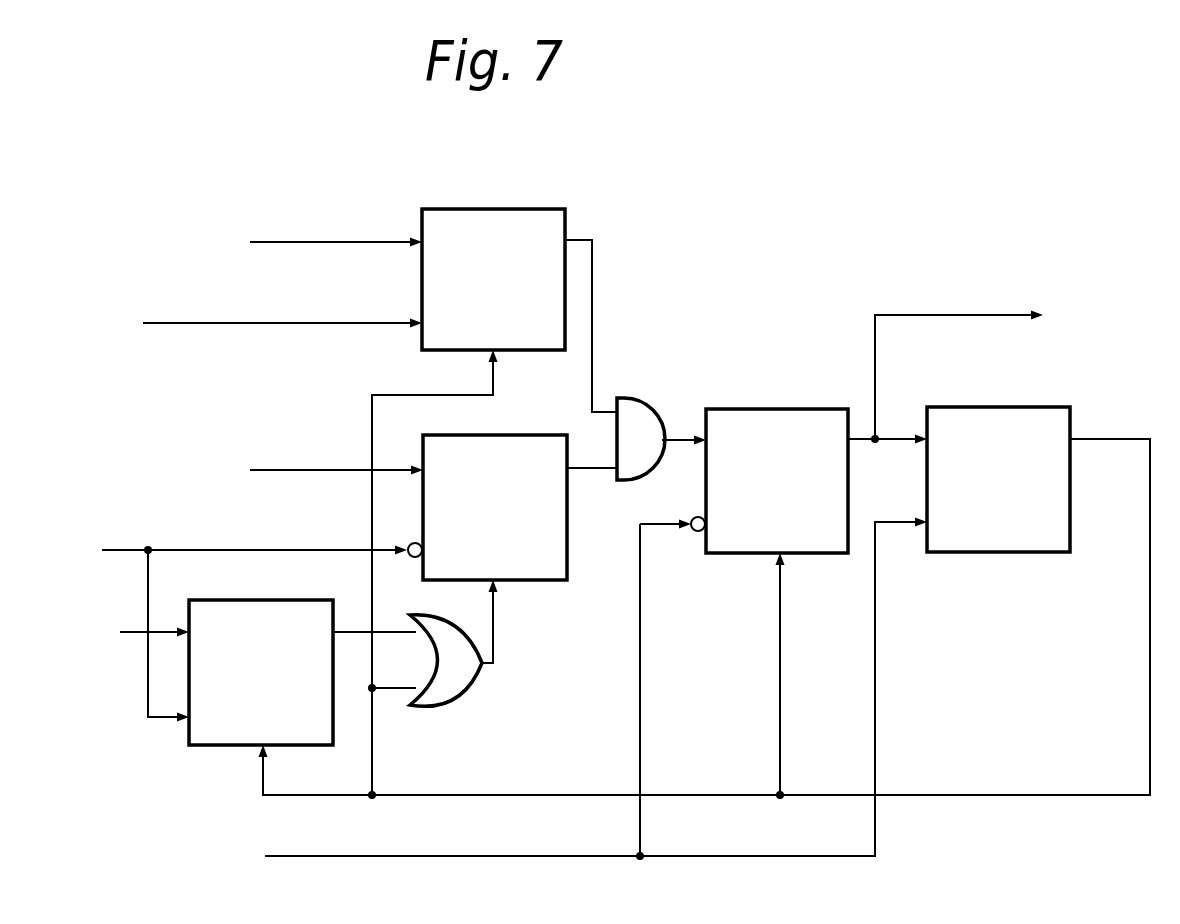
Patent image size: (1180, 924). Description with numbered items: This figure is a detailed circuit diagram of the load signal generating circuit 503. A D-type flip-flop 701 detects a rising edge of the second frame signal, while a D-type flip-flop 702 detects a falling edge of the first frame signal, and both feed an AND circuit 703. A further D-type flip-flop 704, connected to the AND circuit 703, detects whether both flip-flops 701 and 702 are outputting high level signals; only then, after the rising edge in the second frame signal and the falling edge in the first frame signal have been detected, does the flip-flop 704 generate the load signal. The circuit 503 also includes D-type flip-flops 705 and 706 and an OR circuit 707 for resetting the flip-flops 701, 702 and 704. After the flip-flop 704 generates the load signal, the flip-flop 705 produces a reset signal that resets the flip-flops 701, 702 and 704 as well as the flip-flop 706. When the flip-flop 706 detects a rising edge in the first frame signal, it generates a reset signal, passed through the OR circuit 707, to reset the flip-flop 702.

The load signal generating circuit 503 is at (741, 133).
The D-type flip-flop 701 is at (493, 209).
The D-type flip-flop 702 is at (535, 580).
The AND circuit 703 is at (644, 400).
The D-type flip-flop 704 is at (769, 409).
The D-type flip-flop 705 is at (990, 407).
The D-type flip-flop 706 is at (203, 745).
The OR circuit 707 is at (466, 682).